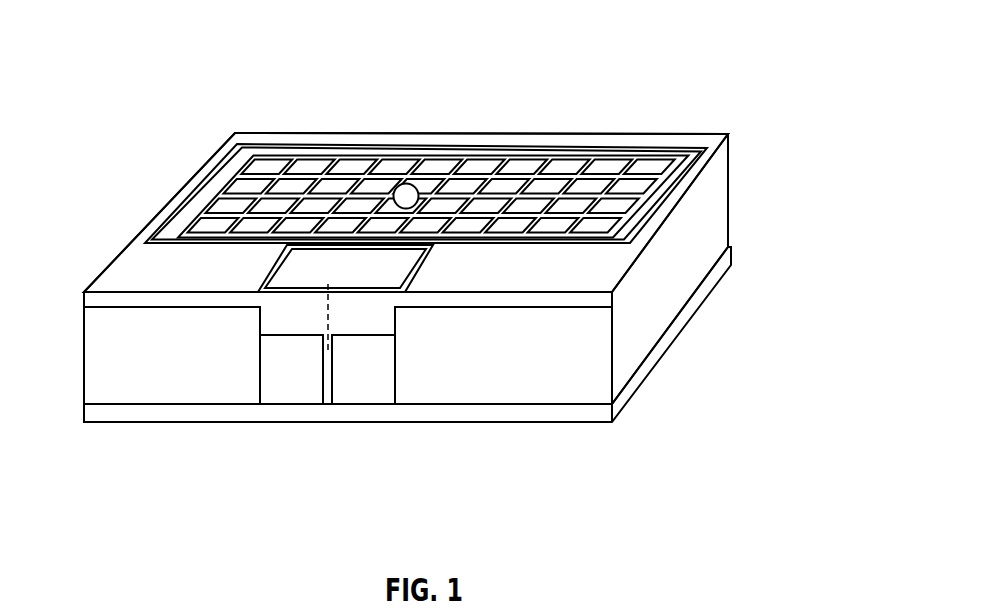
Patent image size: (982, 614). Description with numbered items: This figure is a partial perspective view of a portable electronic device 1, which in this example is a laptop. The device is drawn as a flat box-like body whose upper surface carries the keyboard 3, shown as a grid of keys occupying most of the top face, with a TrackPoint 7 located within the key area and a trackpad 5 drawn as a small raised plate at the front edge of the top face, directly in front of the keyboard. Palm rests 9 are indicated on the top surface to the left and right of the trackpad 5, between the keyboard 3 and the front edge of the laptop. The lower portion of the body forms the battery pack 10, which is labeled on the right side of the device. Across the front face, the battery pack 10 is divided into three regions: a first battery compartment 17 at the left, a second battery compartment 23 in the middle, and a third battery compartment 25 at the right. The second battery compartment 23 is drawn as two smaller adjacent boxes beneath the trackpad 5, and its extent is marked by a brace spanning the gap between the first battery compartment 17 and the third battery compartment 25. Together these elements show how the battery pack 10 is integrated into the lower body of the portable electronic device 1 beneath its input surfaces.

The portable electronic device 1 is at (527, 63).
The keyboard 3 is at (311, 172).
The trackpad 5 is at (386, 288).
The TrackPoint 7 is at (406, 184).
The palm rests 9 is at (168, 263).
The battery pack 10 is at (772, 171).
The first battery compartment 17 is at (172, 355).
The second battery compartment 23 is at (260, 407).
The third battery compartment 25 is at (503, 355).